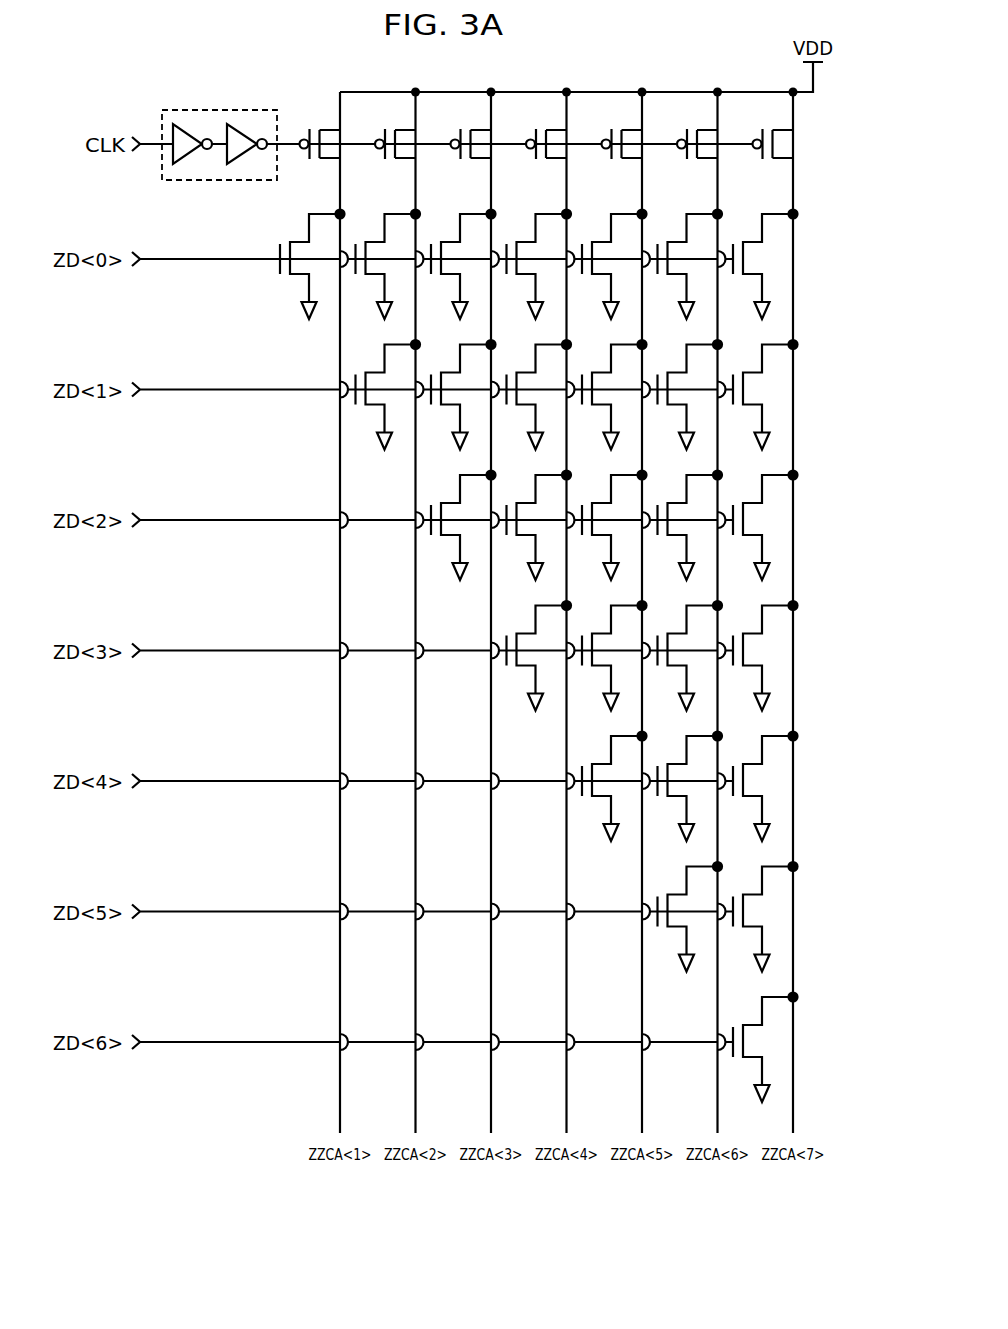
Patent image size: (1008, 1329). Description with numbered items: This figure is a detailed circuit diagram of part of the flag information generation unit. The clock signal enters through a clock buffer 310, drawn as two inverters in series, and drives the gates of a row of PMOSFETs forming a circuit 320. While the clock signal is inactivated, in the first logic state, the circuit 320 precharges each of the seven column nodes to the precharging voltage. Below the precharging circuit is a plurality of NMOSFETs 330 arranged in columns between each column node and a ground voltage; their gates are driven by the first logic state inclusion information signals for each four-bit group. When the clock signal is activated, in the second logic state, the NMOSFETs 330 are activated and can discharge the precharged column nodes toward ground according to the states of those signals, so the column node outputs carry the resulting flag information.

The clock buffer 310 is at (222, 110).
The circuit 320 is at (812, 97).
The plurality of NMOSFETs 330 is at (812, 213).